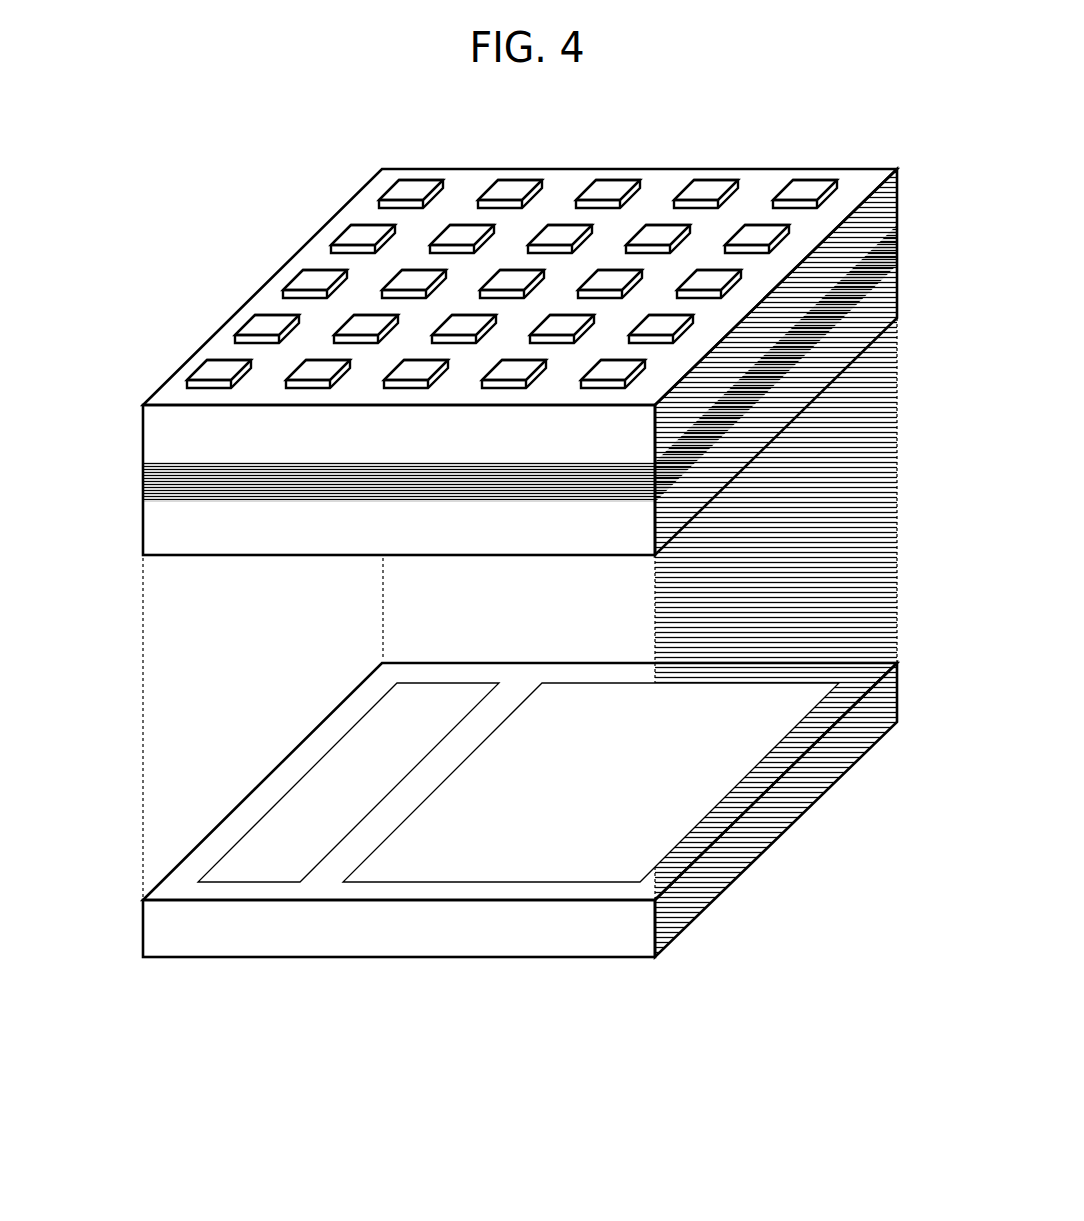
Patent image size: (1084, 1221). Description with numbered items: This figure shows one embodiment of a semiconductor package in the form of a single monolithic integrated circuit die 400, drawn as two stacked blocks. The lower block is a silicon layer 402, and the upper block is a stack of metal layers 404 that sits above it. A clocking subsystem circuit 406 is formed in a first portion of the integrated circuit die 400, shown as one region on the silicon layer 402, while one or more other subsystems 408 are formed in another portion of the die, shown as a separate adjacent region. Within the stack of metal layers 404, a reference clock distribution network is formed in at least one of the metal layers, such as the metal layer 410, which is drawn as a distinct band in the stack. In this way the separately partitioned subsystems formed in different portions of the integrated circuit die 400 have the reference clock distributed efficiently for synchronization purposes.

The integrated circuit die 400 is at (503, 586).
The silicon layer 402 is at (471, 858).
The stack of metal layers 404 is at (503, 363).
The clocking subsystem circuit 406 is at (245, 882).
The other subsystems 408 is at (483, 882).
The metal layer 410 is at (902, 250).